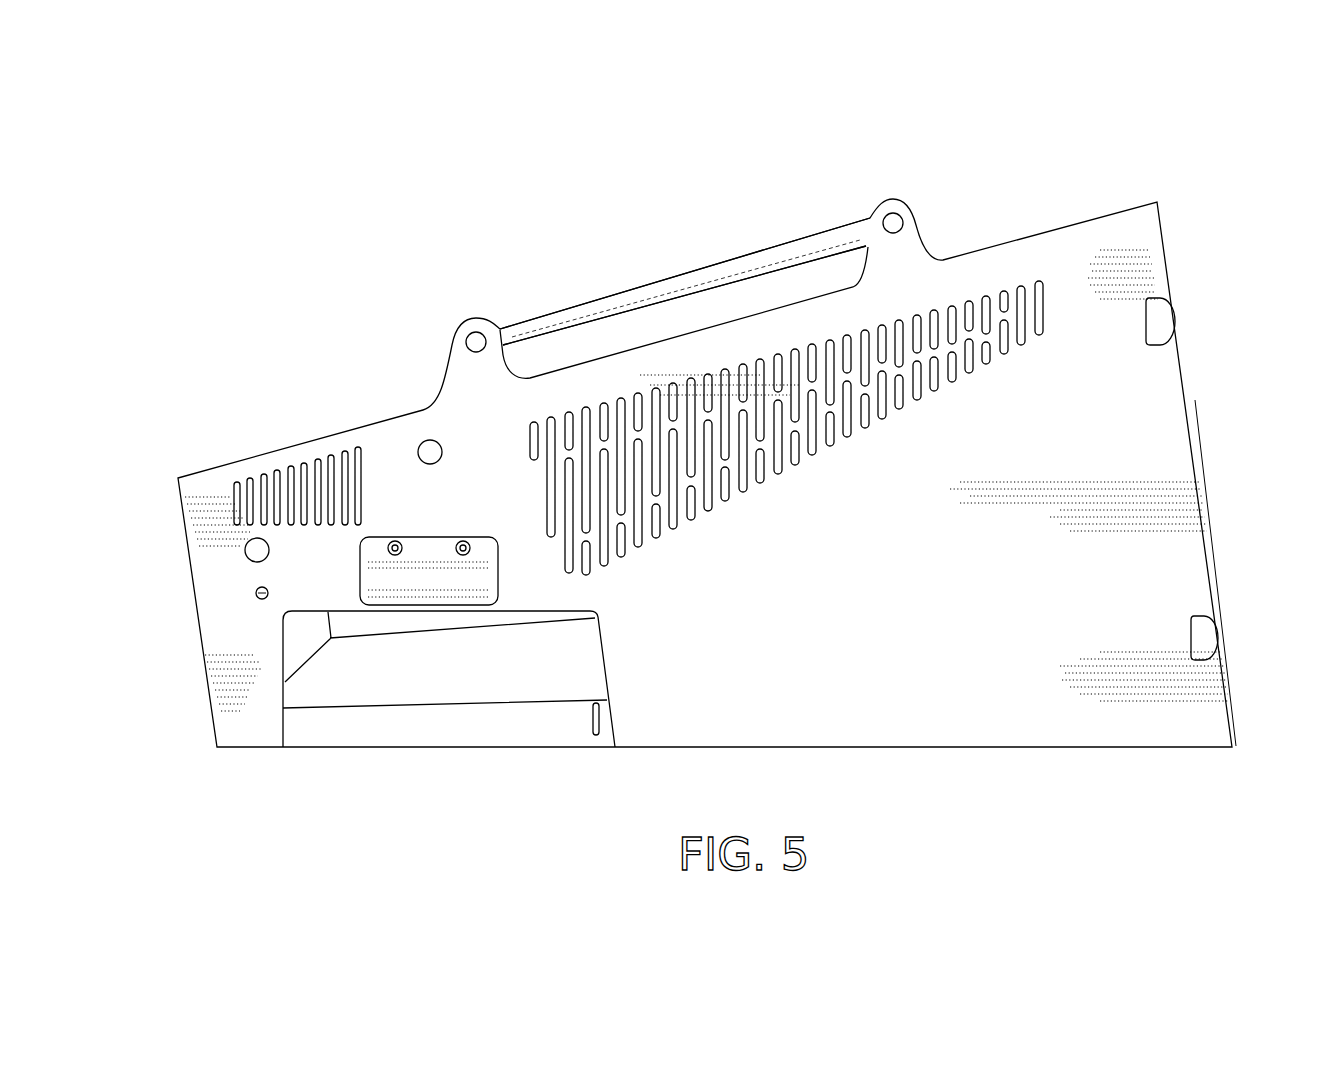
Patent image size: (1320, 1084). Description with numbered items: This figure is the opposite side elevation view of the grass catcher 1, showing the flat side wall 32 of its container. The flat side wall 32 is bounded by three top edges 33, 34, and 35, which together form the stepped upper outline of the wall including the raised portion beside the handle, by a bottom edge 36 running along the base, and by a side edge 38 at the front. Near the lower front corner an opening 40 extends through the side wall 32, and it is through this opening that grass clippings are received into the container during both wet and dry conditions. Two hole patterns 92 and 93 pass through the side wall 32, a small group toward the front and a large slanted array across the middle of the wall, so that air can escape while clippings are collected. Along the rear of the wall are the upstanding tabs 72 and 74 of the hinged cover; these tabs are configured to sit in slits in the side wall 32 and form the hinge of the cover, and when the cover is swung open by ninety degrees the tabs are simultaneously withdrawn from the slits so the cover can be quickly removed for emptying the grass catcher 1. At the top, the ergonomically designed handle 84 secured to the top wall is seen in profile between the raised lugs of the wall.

The grass catcher 1 is at (1020, 184).
The flat side wall 32 is at (871, 599).
The top edge 33 is at (987, 248).
The top edge 34 is at (738, 320).
The top edge 35 is at (362, 420).
The bottom edge 36 is at (849, 747).
The side edge 38 is at (196, 602).
The opening 40 is at (583, 637).
The upstanding tab 72 is at (1165, 320).
The upstanding tab 74 is at (1210, 636).
The ergonomically designed handle 84 is at (597, 303).
The hole pattern 92 is at (268, 484).
The hole pattern 93 is at (690, 478).